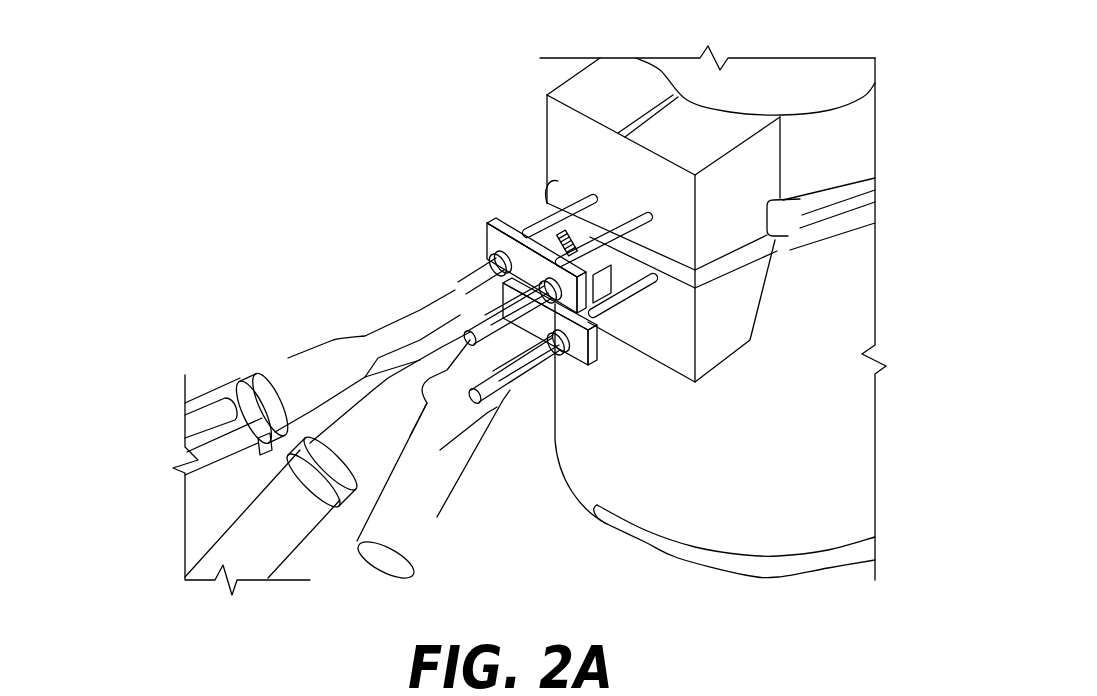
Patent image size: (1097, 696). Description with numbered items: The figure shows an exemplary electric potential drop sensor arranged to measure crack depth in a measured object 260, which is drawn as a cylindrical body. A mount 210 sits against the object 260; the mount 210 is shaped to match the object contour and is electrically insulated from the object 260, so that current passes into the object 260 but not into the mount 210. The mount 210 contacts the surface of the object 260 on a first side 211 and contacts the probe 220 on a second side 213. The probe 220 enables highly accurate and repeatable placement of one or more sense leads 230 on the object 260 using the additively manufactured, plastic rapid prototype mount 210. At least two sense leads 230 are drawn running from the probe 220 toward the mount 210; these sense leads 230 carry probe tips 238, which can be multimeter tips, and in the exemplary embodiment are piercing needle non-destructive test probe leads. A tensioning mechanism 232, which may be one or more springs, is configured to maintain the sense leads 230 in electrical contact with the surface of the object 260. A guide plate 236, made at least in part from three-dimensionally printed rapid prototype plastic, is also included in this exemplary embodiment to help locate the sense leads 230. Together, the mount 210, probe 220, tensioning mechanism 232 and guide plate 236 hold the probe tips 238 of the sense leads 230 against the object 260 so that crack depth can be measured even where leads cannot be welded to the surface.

The mount 210 is at (632, 73).
The first side 211 is at (717, 110).
The second side 213 is at (562, 122).
The probe 220 is at (130, 194).
The sense leads 230 is at (193, 427).
The tensioning mechanism 232 is at (553, 243).
The guide plate 236 is at (492, 240).
The probe tips 238 is at (427, 387).
The object 260 is at (853, 460).